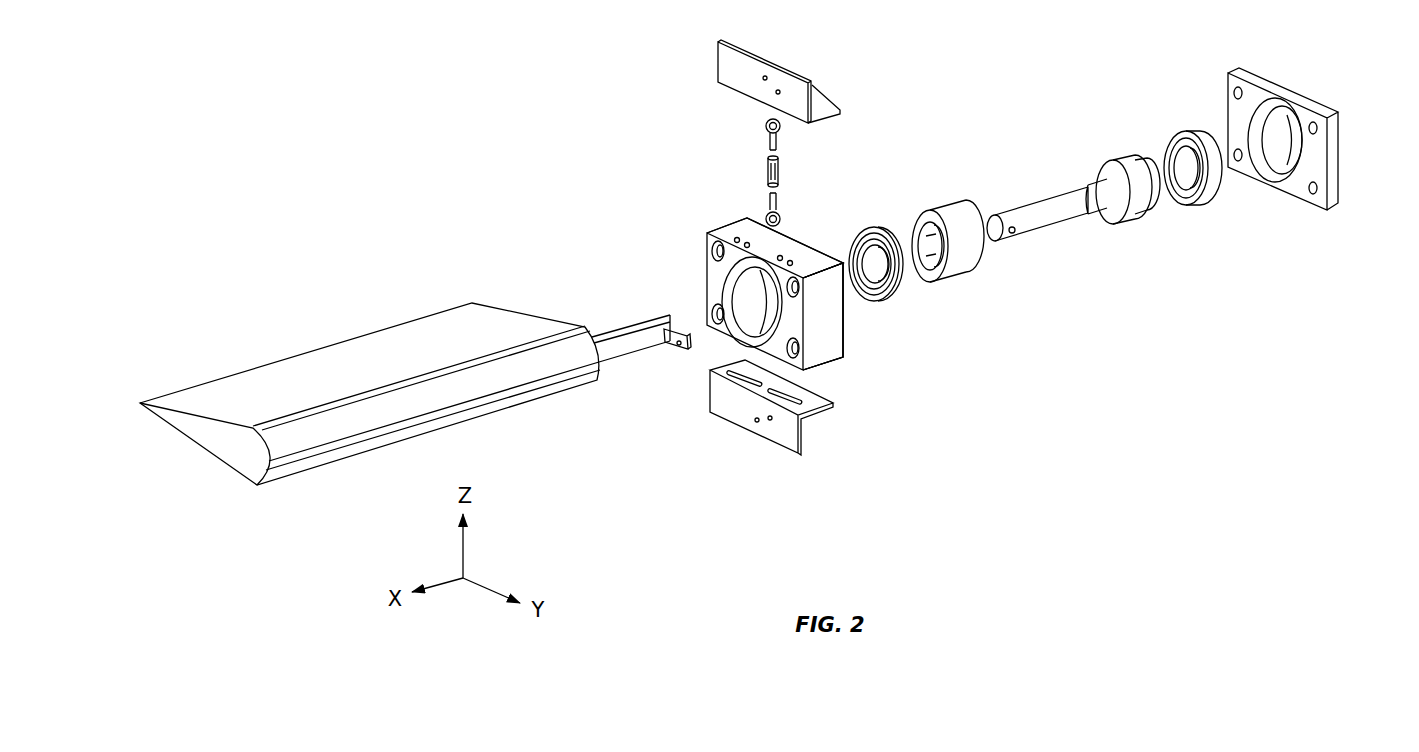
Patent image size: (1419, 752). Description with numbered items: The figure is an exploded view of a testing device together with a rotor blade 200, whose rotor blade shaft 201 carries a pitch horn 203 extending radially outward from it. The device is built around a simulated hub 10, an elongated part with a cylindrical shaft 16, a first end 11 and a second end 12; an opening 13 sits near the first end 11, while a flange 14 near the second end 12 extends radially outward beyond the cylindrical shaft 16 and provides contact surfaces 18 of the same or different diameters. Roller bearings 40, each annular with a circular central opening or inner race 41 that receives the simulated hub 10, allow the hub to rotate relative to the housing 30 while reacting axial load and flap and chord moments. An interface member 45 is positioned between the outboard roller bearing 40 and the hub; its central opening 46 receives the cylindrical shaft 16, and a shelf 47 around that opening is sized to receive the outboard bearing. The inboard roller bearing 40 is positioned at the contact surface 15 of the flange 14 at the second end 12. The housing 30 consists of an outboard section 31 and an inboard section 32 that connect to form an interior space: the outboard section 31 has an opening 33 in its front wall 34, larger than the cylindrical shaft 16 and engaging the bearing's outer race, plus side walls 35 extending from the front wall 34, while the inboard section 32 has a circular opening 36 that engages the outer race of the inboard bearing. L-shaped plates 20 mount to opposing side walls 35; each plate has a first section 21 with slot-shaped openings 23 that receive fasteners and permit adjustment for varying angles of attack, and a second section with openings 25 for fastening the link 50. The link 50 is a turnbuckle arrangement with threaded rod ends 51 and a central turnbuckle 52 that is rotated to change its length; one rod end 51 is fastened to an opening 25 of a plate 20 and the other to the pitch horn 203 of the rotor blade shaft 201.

The simulated hub 10 is at (1069, 198).
The first end 11 is at (992, 222).
The second end 12 is at (1153, 166).
The opening 13 is at (1012, 235).
The flange 14 is at (1132, 225).
The contact surface 15 is at (1128, 158).
The cylindrical shaft 16 is at (1050, 208).
The contact surfaces 18 is at (1108, 159).
The plates 20 is at (760, 256).
The first section 21 is at (826, 118).
The openings 23 is at (774, 393).
The openings 25 is at (779, 91).
The housing 30 is at (702, 223).
The outboard section 31 is at (843, 353).
The inboard section 32 is at (1313, 130).
The opening 33 is at (760, 300).
The front wall 34 is at (727, 328).
The side walls 35 is at (790, 248).
The opening 36 is at (1276, 103).
The roller bearings 40 is at (1053, 229).
The inner race 41 is at (862, 226).
The interface member 45 is at (957, 264).
The central opening 46 is at (923, 277).
The shelf 47 is at (923, 213).
The link 50 is at (693, 172).
The rod ends 51 is at (766, 136).
The turnbuckle 52 is at (766, 170).
The rotor blade 200 is at (298, 322).
The rotor blade shaft 201 is at (603, 338).
The pitch horn 203 is at (670, 347).